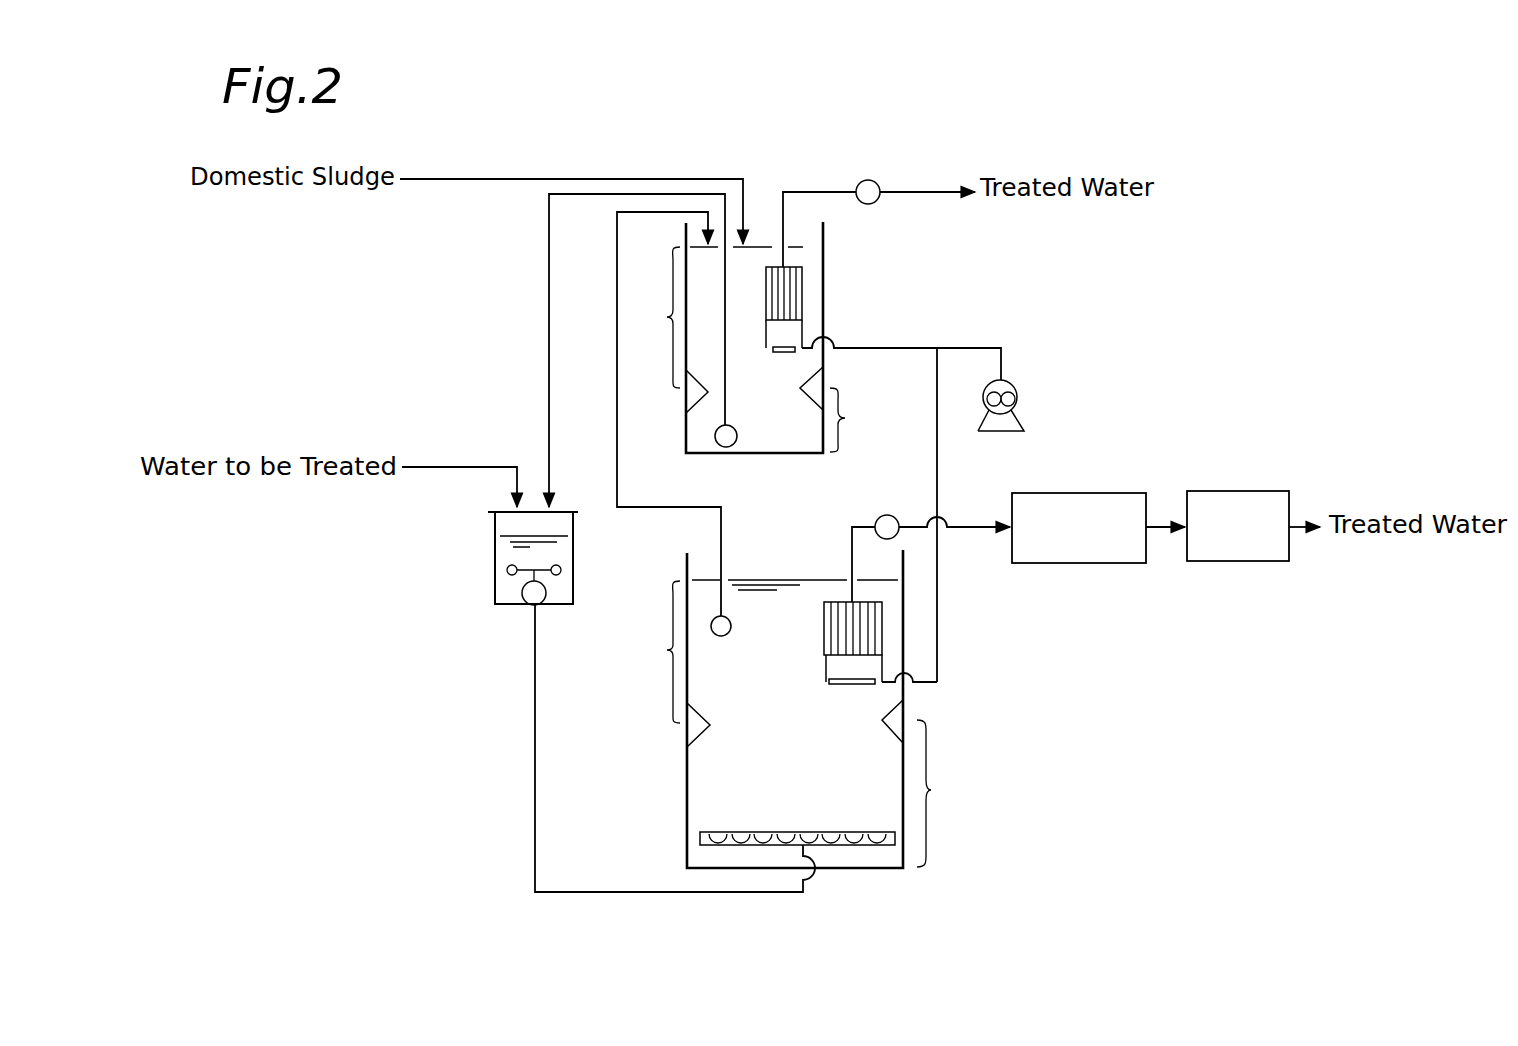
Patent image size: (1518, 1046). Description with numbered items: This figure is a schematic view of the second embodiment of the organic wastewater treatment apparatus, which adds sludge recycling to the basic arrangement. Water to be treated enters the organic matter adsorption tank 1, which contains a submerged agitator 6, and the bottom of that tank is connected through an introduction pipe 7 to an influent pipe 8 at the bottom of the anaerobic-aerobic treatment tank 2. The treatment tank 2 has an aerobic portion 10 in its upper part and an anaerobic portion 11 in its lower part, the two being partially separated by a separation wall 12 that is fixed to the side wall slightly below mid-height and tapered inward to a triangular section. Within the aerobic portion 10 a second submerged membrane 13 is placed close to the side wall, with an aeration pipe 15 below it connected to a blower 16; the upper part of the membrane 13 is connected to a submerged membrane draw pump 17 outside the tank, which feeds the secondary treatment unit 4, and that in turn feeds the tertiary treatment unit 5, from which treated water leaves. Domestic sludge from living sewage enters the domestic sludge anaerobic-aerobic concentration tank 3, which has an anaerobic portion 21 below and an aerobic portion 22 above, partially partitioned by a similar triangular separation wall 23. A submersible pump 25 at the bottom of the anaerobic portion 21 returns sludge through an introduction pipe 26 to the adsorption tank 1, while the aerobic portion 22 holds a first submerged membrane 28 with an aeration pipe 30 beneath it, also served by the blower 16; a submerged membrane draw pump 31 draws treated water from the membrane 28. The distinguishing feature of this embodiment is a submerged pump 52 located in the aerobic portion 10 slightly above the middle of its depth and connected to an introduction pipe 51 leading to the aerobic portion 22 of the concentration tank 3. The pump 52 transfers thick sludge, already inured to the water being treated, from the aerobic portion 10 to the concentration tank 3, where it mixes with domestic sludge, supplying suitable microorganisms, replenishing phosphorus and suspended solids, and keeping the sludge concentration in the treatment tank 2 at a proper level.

The organic matter adsorption tank 1 is at (491, 540).
The anaerobic-aerobic treatment tank 2 is at (908, 607).
The domestic sludge anaerobic-aerobic concentration tank 3 is at (827, 258).
The secondary treatment unit 4 is at (1071, 492).
The tertiary treatment unit 5 is at (1236, 490).
The submerged agitator 6 is at (520, 591).
The introduction pipe 7 is at (535, 698).
The influent pipe 8 is at (860, 846).
The aerobic portion 10 is at (656, 652).
The anaerobic portion 11 is at (941, 793).
The separation wall 12 is at (688, 731).
The second submerged membrane 13 is at (882, 637).
The aeration pipe 15 is at (858, 685).
The blower 16 is at (1017, 398).
The submerged membrane draw pump 17 is at (880, 516).
The anaerobic portion 21 is at (852, 420).
The aerobic portion 22 is at (655, 317).
The separation wall 23 is at (697, 396).
The submersible pump 25 is at (737, 444).
The introduction pipe 26 is at (548, 351).
The first submerged membrane 28 is at (802, 297).
The aeration pipe 30 is at (788, 344).
The submerged membrane draw pump 31 is at (868, 180).
The introduction pipe 51 is at (616, 352).
The submerged pump 52 is at (733, 622).